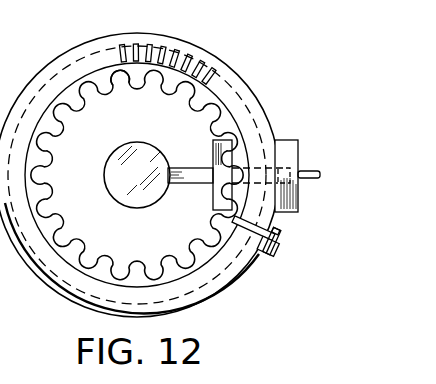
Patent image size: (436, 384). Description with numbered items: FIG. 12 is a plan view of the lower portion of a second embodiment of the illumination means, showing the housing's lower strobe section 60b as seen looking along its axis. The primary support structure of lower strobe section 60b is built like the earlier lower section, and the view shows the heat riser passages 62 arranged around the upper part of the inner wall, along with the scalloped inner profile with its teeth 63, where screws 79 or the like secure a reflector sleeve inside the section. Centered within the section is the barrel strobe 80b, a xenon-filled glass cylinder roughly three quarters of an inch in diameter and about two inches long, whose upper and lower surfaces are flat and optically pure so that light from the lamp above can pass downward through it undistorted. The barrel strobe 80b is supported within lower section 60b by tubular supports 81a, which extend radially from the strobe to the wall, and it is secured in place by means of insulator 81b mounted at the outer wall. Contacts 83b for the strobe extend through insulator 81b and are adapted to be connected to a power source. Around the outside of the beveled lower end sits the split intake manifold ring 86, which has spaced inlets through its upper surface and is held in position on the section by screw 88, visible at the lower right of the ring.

The lower strobe section 60b is at (249, 67).
The heat riser passages 62 is at (169, 50).
The gear teeth 63 is at (97, 82).
The screws 79 is at (85, 262).
The barrel strobe 80b is at (105, 182).
The tubular supports 81a is at (200, 184).
The insulator 81b is at (288, 139).
The contacts 83b is at (312, 170).
The manifold ring 86 is at (220, 298).
The screw 88 is at (268, 256).